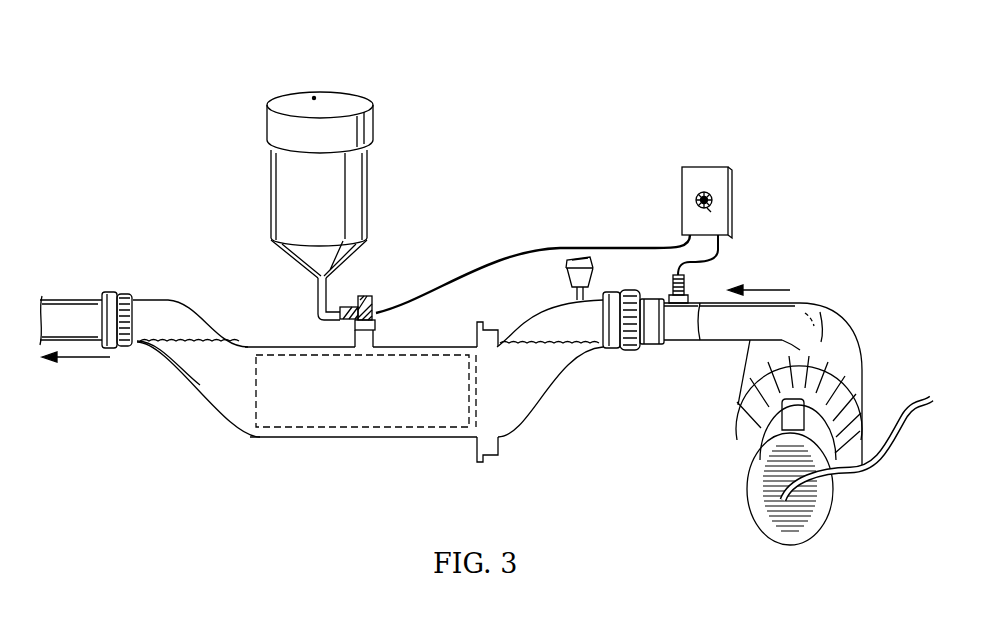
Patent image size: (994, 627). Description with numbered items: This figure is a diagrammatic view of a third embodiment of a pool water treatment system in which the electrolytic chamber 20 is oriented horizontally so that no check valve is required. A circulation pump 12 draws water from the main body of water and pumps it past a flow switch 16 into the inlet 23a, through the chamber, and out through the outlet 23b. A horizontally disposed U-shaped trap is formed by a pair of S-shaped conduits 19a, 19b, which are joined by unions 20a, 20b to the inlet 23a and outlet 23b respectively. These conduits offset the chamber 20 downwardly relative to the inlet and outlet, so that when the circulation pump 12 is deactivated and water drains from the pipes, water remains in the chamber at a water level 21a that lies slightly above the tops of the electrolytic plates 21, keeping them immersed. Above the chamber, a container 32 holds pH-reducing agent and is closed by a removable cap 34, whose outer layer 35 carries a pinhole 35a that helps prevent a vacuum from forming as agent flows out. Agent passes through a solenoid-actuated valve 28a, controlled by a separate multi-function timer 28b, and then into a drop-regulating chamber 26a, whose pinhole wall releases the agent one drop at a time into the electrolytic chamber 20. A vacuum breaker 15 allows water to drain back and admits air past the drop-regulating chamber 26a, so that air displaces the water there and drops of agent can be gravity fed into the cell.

The circulation pump 12 is at (745, 380).
The vacuum breaker 15 is at (594, 266).
The flow switch 16 is at (686, 280).
The S-shaped conduit 19a is at (540, 314).
The S-shaped conduit 19b is at (195, 305).
The electrolytic chamber 20 is at (298, 345).
The union 20a is at (620, 352).
The union 20b is at (118, 292).
The electrolytic plates 21 is at (250, 424).
The water level 21a is at (157, 343).
The inlet 23a is at (654, 300).
The outlet 23b is at (83, 334).
The drop-regulating chamber 26a is at (380, 324).
The solenoid-actuated valve 28a is at (378, 283).
The multi-function timer 28b is at (712, 202).
The container 32 is at (271, 180).
The removable cap 34 is at (267, 124).
The outer layer 35 is at (360, 100).
The pinhole 35a is at (313, 96).